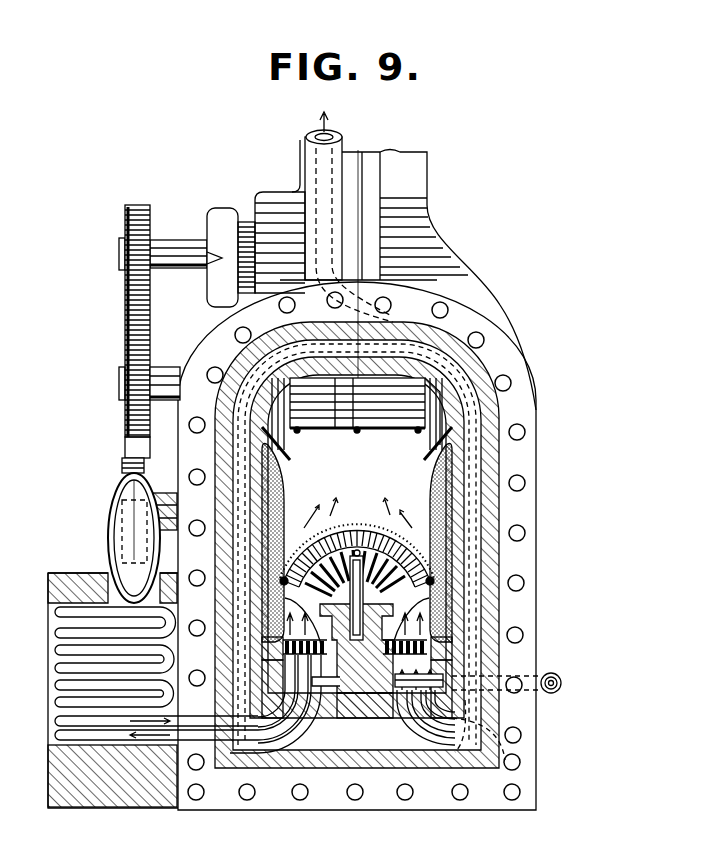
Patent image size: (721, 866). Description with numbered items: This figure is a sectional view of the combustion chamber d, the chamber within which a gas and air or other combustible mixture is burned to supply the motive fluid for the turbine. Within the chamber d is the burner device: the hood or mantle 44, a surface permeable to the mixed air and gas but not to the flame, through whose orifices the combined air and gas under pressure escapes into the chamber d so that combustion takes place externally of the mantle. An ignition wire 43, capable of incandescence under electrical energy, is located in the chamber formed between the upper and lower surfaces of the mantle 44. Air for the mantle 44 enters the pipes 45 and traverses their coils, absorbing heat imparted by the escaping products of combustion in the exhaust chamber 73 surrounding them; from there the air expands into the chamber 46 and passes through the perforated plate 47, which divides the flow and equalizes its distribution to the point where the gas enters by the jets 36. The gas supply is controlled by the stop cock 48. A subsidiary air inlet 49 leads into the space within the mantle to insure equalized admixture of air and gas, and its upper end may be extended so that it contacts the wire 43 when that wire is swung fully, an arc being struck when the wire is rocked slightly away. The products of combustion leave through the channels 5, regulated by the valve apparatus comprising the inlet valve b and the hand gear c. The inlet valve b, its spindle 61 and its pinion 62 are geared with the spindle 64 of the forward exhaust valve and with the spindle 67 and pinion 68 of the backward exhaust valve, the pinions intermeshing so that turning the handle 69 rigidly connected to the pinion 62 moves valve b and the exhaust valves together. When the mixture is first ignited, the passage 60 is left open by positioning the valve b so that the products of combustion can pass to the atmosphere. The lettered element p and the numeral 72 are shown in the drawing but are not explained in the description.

The passage 60 is at (313, 153).
The spindle 67 is at (172, 240).
The pinion 68 is at (125, 287).
The hand gear c is at (97, 321).
The spindle 61 is at (153, 373).
The pinion 62 is at (122, 417).
The spindle 64 is at (153, 500).
The handle 69 is at (120, 503).
The pipes 45 is at (247, 696).
The exhaust chamber 73 is at (82, 740).
The stop cock 48 is at (340, 722).
The base support p is at (363, 737).
The chamber 46 is at (350, 647).
The ignition wire 43 is at (430, 544).
The hood or mantle 44 is at (397, 548).
The jets 36 is at (450, 617).
The subsidiary air inlet 49 is at (500, 627).
The perforated plate 47 is at (487, 653).
The housing wall 72 is at (473, 455).
The channels 5 is at (298, 442).
The inlet valve b is at (323, 432).
The combustion chamber d is at (425, 437).